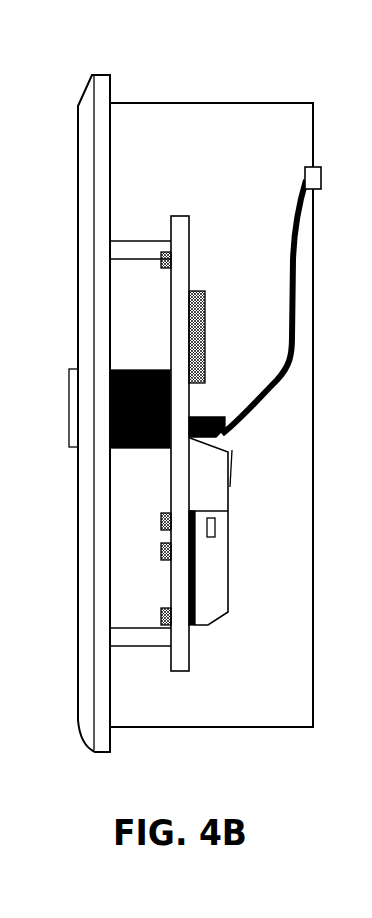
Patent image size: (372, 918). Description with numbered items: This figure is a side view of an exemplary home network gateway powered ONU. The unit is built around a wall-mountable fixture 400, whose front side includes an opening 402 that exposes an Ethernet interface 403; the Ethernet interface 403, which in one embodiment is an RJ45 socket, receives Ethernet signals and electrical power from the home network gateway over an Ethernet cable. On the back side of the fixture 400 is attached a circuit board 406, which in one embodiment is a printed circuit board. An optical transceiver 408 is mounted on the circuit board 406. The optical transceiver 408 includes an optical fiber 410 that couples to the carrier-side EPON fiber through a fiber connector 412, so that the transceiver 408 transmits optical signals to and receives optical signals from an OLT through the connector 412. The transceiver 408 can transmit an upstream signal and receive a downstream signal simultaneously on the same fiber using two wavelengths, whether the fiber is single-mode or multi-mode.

The wall-mountable fixture 400 is at (110, 75).
The opening 402 is at (66, 408).
The Ethernet interface 403 is at (141, 450).
The circuit board 406 is at (189, 216).
The optical transceiver 408 is at (230, 588).
The optical fiber 410 is at (288, 332).
The fiber connector 412 is at (321, 178).